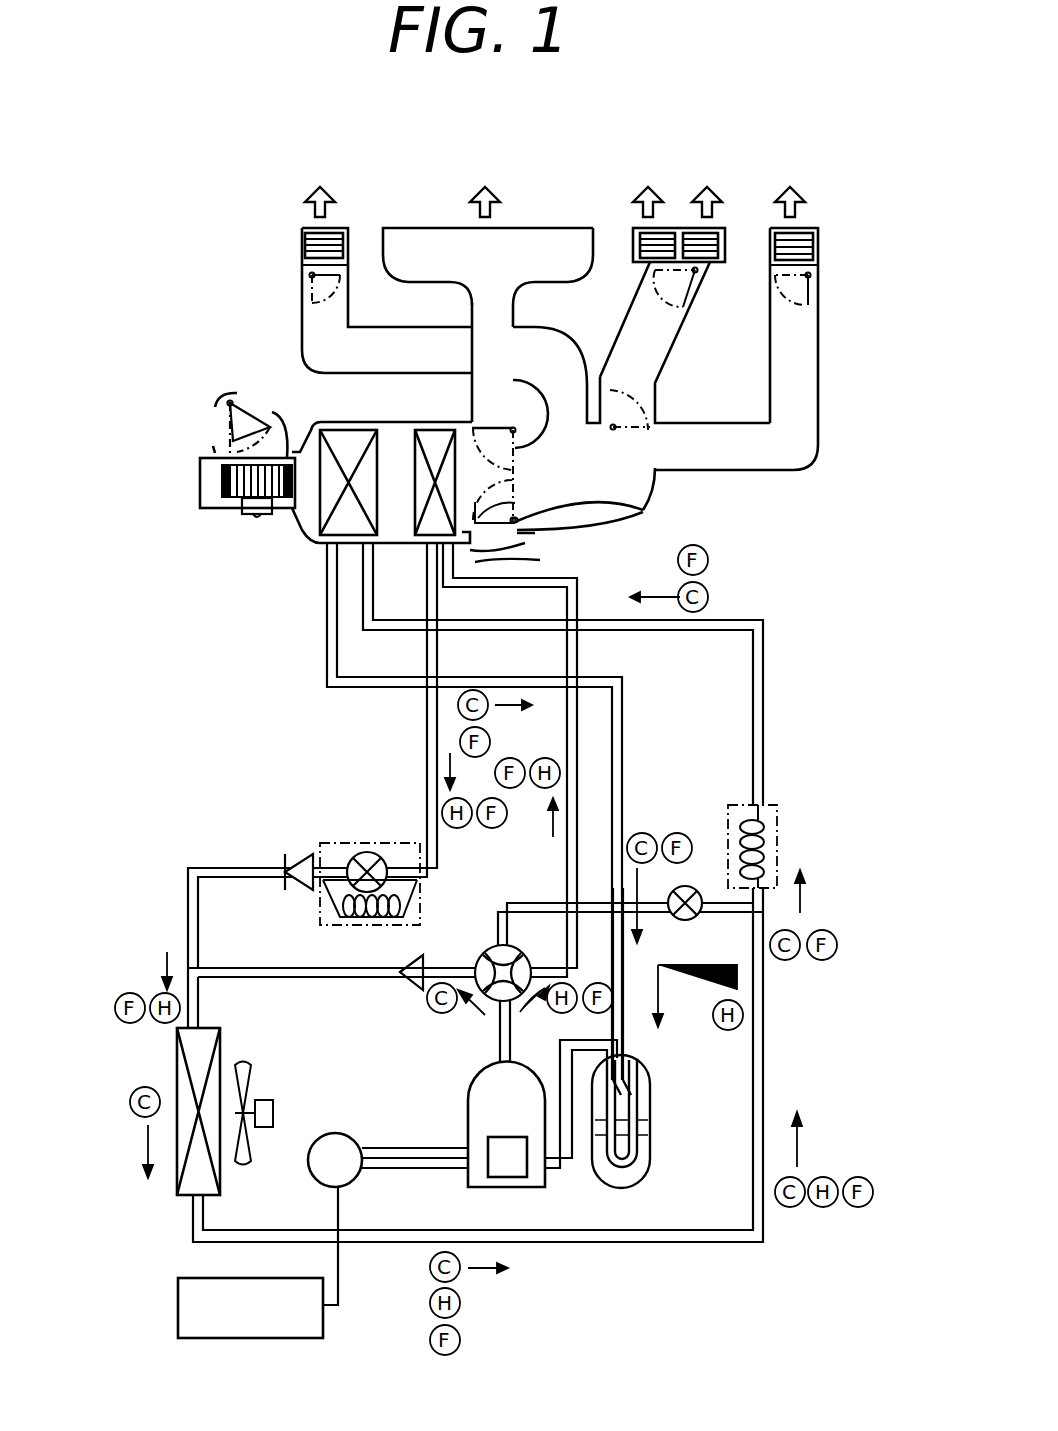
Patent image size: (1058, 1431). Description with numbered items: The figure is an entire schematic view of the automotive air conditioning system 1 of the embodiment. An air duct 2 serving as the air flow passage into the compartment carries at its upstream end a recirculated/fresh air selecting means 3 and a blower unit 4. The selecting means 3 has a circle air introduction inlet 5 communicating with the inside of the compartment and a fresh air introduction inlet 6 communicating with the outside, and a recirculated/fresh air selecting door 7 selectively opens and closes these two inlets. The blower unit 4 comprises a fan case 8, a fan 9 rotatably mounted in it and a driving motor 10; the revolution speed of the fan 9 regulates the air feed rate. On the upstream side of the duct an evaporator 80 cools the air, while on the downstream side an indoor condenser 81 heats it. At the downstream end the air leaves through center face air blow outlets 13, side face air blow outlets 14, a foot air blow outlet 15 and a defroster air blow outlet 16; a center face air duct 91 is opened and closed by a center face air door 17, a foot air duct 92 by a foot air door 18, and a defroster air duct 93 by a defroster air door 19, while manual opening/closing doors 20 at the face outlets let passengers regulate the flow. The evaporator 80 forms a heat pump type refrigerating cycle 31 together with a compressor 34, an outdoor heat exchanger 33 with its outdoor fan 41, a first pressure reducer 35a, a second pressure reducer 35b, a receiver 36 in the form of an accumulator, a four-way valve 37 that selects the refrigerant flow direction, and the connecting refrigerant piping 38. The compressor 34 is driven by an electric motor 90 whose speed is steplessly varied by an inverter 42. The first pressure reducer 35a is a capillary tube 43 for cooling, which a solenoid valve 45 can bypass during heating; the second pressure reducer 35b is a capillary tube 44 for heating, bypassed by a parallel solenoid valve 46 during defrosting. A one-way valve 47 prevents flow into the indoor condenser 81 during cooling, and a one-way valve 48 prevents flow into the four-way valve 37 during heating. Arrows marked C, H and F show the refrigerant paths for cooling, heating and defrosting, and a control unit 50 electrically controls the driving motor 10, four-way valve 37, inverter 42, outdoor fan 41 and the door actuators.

The air conditioning system 1 is at (128, 373).
The air duct 2 is at (447, 422).
The recirculated/fresh air selecting means 3 is at (200, 376).
The blower unit 4 is at (209, 530).
The circle air introduction inlet 5 is at (222, 425).
The fresh air introduction inlet 6 is at (253, 387).
The recirculated/fresh air selecting door 7 is at (260, 423).
The fan case 8 is at (197, 499).
The fan 9 is at (227, 480).
The driving motor 10 is at (267, 512).
The center face air blow outlets 13 is at (730, 262).
The side face air blow outlets 14 is at (305, 243).
The foot air blow outlet 15 is at (522, 550).
The defroster air blow outlet 16 is at (515, 228).
The center face air door 17 is at (630, 411).
The foot air door 18 is at (598, 499).
The defroster air door 19 is at (515, 428).
The manual opening/closing doors 20 is at (303, 303).
The heat pump type refrigerating cycle 31 is at (168, 846).
The outdoor heat exchanger 33 is at (177, 1060).
The compressor 34 is at (468, 1128).
The first pressure reducer 35a is at (772, 810).
The second pressure reducer 35b is at (358, 843).
The receiver 36 is at (650, 1083).
The four-way valve 37 is at (486, 950).
The refrigerant piping 38 is at (335, 978).
The outdoor fan 41 is at (258, 1100).
The inverter 42 is at (352, 1136).
The capillary tube for cooling 43 is at (765, 860).
The capillary tube for heating 44 is at (360, 923).
The solenoid valve 45 is at (690, 887).
The solenoid valve 46 is at (372, 852).
The one-way valve 47 is at (300, 858).
The one-way valve 48 is at (412, 990).
The control unit 50 is at (178, 1310).
The evaporator 80 is at (348, 522).
The indoor condenser 81 is at (428, 520).
The electric motor 90 is at (513, 1172).
The center face air duct 91 is at (672, 340).
The foot air duct 92 is at (540, 527).
The defroster air duct 93 is at (467, 413).